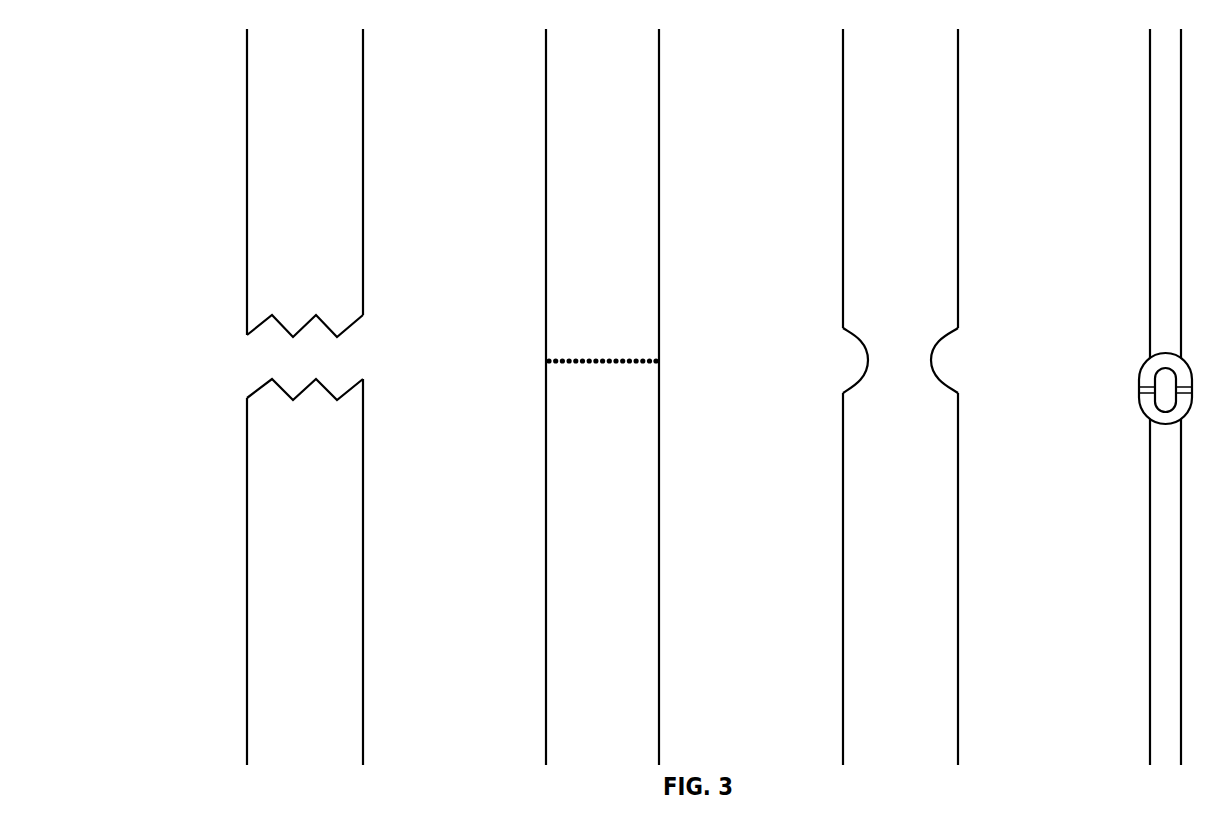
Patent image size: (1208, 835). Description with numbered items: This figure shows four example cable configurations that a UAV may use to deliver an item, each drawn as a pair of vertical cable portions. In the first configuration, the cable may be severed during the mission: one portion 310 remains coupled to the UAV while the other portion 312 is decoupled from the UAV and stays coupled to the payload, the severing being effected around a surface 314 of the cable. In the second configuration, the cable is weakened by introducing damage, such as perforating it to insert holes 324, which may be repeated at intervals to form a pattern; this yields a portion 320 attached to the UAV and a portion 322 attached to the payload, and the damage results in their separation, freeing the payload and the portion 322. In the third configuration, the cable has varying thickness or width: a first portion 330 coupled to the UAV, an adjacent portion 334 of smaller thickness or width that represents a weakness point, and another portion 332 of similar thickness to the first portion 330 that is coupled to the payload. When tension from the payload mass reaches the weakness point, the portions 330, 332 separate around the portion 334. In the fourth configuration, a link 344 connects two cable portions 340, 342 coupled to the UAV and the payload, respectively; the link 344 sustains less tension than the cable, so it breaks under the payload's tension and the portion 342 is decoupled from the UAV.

The portion 310 is at (247, 190).
The portion 312 is at (247, 518).
The surface 314 is at (230, 312).
The portion 320 is at (546, 190).
The portion 322 is at (546, 518).
The holes 324 is at (532, 361).
The first portion 330 is at (843, 181).
The portion 332 is at (843, 510).
The adjacent portion 334 is at (827, 303).
The portion 340 is at (1150, 181).
The portion 342 is at (1150, 630).
The link 344 is at (1139, 390).